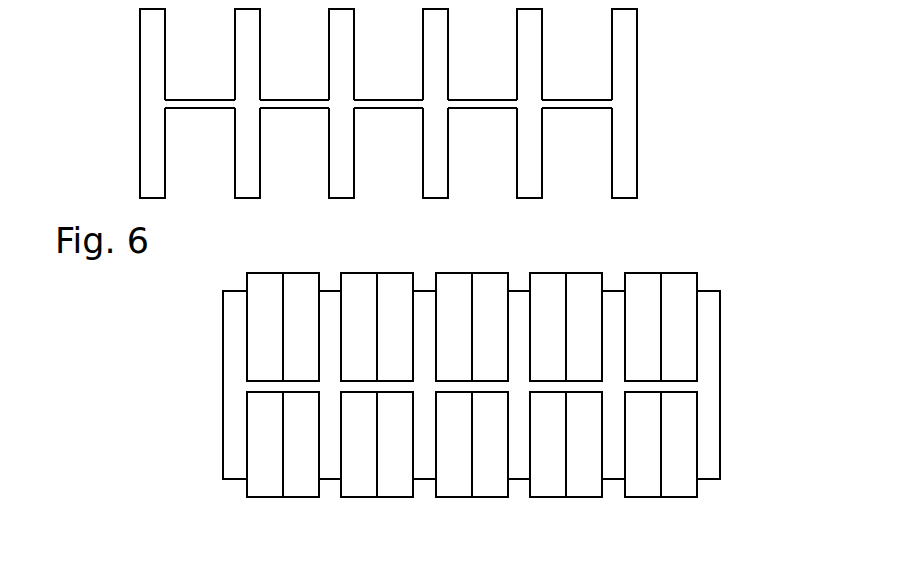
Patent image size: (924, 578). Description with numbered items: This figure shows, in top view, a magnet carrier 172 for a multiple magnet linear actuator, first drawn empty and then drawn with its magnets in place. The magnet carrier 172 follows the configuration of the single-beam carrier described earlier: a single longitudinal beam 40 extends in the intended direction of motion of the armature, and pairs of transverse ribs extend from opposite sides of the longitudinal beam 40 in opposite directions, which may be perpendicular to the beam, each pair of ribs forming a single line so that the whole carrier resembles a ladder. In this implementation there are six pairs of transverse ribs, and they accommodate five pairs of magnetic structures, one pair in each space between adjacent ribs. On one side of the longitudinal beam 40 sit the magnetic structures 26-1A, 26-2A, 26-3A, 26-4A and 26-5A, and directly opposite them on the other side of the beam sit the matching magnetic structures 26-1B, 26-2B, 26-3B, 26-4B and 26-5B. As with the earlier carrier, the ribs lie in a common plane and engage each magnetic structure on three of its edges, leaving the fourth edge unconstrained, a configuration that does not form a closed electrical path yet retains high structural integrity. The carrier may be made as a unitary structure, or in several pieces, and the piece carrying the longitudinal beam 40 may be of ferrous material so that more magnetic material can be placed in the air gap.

The magnet carrier 172 is at (104, 120).
The longitudinal beam 40 is at (190, 109).
The magnetic structure 26-1A is at (247, 488).
The magnetic structure 26-1B is at (247, 276).
The magnetic structure 26-2A is at (383, 498).
The magnetic structure 26-2B is at (381, 273).
The magnetic structure 26-3A is at (479, 498).
The magnetic structure 26-3B is at (476, 273).
The magnetic structure 26-4A is at (572, 498).
The magnetic structure 26-4B is at (577, 273).
The magnetic structure 26-5A is at (697, 496).
The magnetic structure 26-5B is at (697, 282).